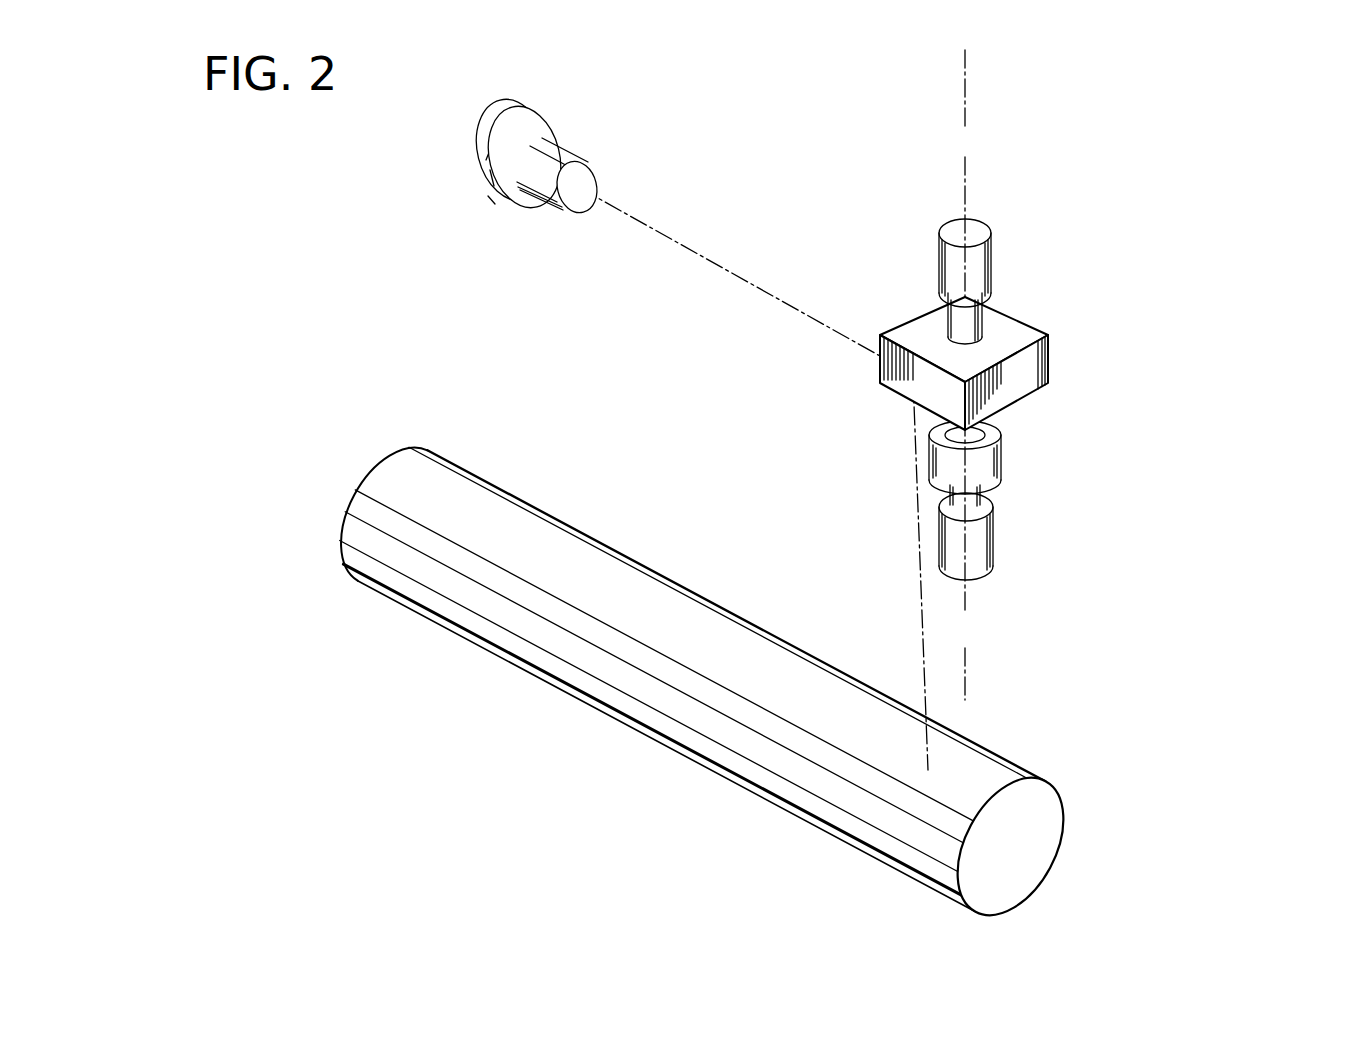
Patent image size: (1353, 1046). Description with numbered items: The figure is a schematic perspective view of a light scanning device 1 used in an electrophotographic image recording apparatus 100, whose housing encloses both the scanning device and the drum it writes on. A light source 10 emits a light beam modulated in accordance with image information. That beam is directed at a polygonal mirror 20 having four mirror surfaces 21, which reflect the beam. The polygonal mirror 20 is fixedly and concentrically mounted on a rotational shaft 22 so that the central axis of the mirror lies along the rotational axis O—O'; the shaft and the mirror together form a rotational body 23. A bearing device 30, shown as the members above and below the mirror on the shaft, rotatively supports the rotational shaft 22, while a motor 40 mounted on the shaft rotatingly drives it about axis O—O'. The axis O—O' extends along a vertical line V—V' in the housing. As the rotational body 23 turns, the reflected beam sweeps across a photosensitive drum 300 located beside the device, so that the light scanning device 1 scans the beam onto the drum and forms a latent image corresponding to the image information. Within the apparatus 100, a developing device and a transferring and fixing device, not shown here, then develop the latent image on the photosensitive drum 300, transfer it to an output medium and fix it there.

The electrophotographic image recording apparatus 100 is at (453, 247).
The light source 10 is at (590, 142).
The light scanning device 1 is at (1152, 228).
The rotational body 23 is at (1177, 332).
The polygonal mirror 20 is at (1018, 327).
The mirror surfaces 21 is at (1040, 370).
The rotational shaft 22 is at (962, 310).
The bearing device 30 is at (977, 232).
The motor 40 is at (1003, 448).
The photosensitive drum 300 is at (1048, 817).